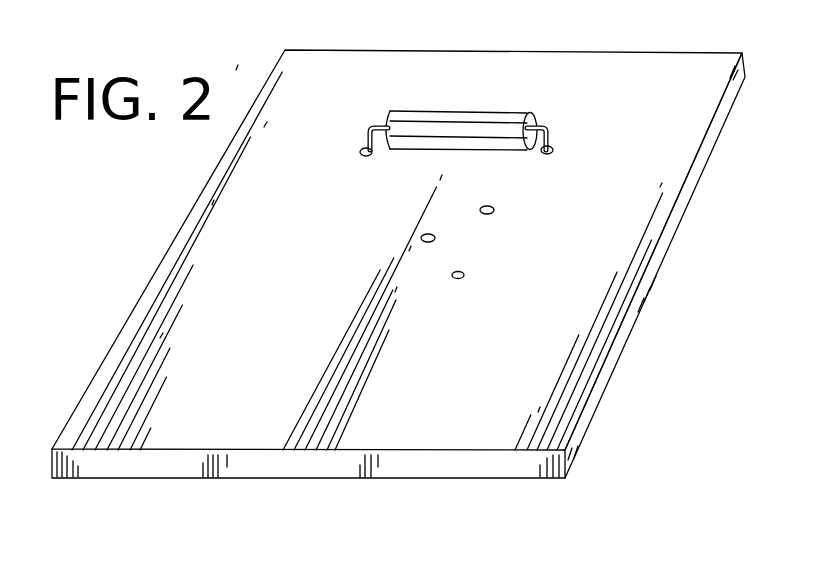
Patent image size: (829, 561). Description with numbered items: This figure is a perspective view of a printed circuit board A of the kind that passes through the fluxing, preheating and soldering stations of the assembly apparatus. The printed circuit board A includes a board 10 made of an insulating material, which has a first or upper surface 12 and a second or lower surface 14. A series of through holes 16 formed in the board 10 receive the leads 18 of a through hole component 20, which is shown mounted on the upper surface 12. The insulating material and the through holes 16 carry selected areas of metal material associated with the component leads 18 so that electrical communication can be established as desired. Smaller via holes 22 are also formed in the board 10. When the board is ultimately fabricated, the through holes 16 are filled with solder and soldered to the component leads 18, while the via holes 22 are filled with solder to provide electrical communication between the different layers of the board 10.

The printed circuit board A is at (655, 42).
The board 10 is at (225, 245).
The first or upper surface 12 is at (435, 66).
The second or lower surface 14 is at (280, 478).
The through holes 16 is at (362, 158).
The leads 18 is at (368, 127).
The through hole component 20 is at (442, 123).
The via holes 22 is at (421, 238).